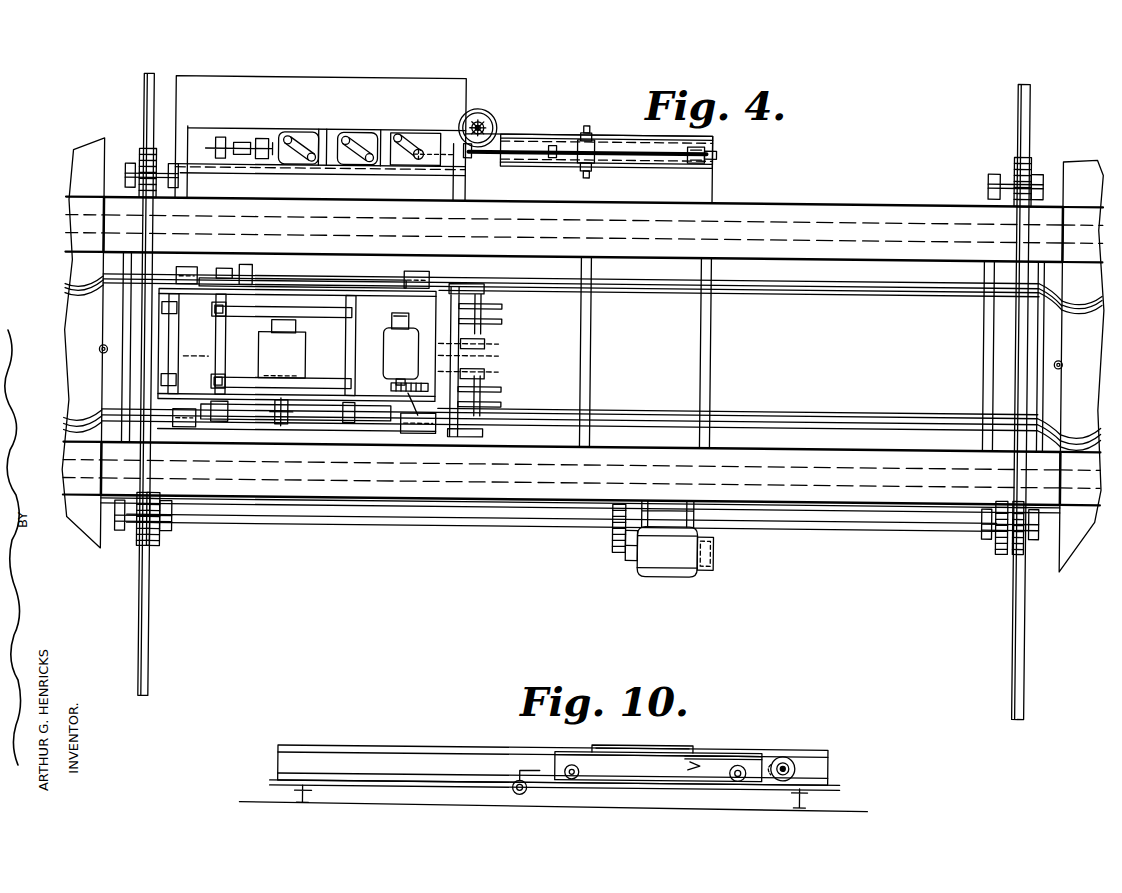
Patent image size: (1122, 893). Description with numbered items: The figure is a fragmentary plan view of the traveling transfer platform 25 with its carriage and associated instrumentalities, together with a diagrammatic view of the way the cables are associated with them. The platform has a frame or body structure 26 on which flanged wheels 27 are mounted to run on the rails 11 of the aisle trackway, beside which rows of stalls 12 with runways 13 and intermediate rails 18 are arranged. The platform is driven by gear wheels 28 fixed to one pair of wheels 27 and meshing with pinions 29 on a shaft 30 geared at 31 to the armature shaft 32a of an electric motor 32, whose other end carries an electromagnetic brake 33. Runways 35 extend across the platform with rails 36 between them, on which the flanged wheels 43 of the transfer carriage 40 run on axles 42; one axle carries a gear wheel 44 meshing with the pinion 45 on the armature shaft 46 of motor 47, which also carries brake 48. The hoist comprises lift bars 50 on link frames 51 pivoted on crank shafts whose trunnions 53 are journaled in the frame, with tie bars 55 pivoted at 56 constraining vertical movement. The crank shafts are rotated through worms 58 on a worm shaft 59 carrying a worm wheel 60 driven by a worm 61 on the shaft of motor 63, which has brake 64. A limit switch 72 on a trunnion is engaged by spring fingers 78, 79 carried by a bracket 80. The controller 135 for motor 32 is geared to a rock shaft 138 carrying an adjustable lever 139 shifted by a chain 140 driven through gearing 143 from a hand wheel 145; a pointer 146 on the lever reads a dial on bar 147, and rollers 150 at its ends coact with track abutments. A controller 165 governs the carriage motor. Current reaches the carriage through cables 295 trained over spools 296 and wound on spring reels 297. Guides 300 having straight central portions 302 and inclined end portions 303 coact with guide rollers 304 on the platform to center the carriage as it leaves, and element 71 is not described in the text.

In FIG. 4, the rails 11 is at (143, 87).
In FIG. 10, the rails 11 is at (300, 797).
In FIG. 4, the stalls 12 is at (68, 268).
In FIG. 4, the guideways or runways 13 is at (78, 205).
In FIG. 4, the rails 18 is at (70, 286).
In FIG. 4, the transfer platform or bridge 25 is at (718, 280).
In FIG. 10, the transfer platform or bridge 25 is at (360, 758).
In FIG. 4, the frame or body structure 26 is at (714, 344).
In FIG. 4, the flanged wheels 27 is at (141, 160).
In FIG. 10, the flanged wheels 27 is at (312, 792).
In FIG. 4, the gear wheels 28 is at (157, 545).
In FIG. 4, the pinions 29 is at (170, 522).
In FIG. 4, the shaft 30 is at (270, 523).
In FIG. 4, the gearing 31 is at (614, 540).
In FIG. 4, the electric motor 32 is at (667, 572).
In FIG. 4, the armature shaft 32a is at (634, 556).
In FIG. 4, the electromagnetic brake 33 is at (718, 549).
In FIG. 4, the guideways or runways 35 is at (855, 214).
In FIG. 4, the rails 36 is at (646, 289).
In FIG. 4, the transfer carriage or dolly 40 is at (318, 292).
In FIG. 10, the transfer carriage or dolly 40 is at (658, 767).
In FIG. 4, the axles 42 is at (432, 312).
In FIG. 4, the flanged wheels 43 is at (187, 266).
In FIG. 4, the gear wheel 44 is at (412, 410).
In FIG. 4, the pinion 45 is at (393, 384).
In FIG. 4, the armature shaft 46 is at (396, 380).
In FIG. 4, the electric motor 47 is at (401, 353).
In FIG. 4, the electromagnetic brake 48 is at (402, 323).
In FIG. 4, the lift bars 50 is at (320, 300).
In FIG. 10, the lift bars 50 is at (672, 744).
In FIG. 4, the link frames 51 is at (226, 338).
In FIG. 4, the trunnions 53 is at (224, 313).
In FIG. 4, the tie bars or tie links 55 is at (212, 378).
In FIG. 4, the pivotal mounting 56 is at (163, 306).
In FIG. 4, the worms 58 is at (222, 420).
In FIG. 4, the worm shaft 59 is at (295, 424).
In FIG. 4, the worm wheel 60 is at (288, 424).
In FIG. 4, the worm 61 is at (268, 430).
In FIG. 4, the electric motor 63 is at (281, 355).
In FIG. 4, the electromagnetic brake 64 is at (284, 327).
In FIG. 4, the cam plate 71 is at (354, 128).
In FIG. 4, the limit switch 72 is at (233, 268).
In FIG. 4, the spring finger 78 is at (268, 280).
In FIG. 4, the spring finger 79 is at (250, 268).
In FIG. 4, the bracket 80 is at (233, 270).
In FIG. 4, the controller 135 is at (421, 143).
In FIG. 4, the rock shaft 138 is at (462, 120).
In FIG. 4, the rockable lever 139 is at (582, 160).
In FIG. 4, the chain or flexible element 140 is at (508, 142).
In FIG. 4, the gearing 143 is at (483, 118).
In FIG. 4, the hand wheel 145 is at (480, 120).
In FIG. 4, the pointer 146 is at (592, 140).
In FIG. 4, the bar 147 is at (640, 138).
In FIG. 4, the rollers 150 is at (588, 120).
In FIG. 4, the controller 165 is at (295, 128).
In FIG. 10, the cables 295 is at (752, 756).
In FIG. 10, the rollers or spools 296 is at (520, 777).
In FIG. 10, the reels 297 is at (790, 756).
In FIG. 4, the guides 300 is at (158, 342).
In FIG. 4, the central portion 302 is at (158, 372).
In FIG. 4, the end portions 303 is at (498, 362).
In FIG. 4, the guide rollers 304 is at (104, 352).